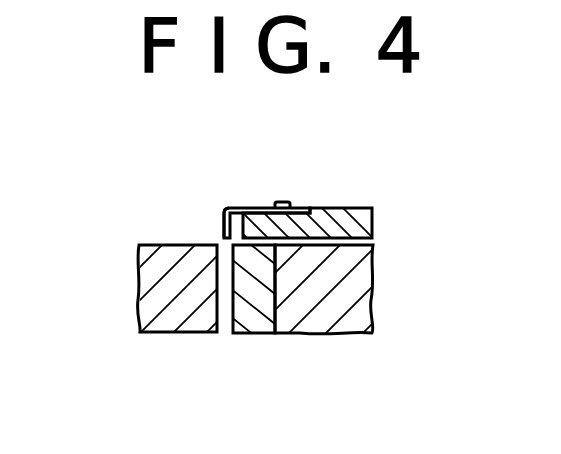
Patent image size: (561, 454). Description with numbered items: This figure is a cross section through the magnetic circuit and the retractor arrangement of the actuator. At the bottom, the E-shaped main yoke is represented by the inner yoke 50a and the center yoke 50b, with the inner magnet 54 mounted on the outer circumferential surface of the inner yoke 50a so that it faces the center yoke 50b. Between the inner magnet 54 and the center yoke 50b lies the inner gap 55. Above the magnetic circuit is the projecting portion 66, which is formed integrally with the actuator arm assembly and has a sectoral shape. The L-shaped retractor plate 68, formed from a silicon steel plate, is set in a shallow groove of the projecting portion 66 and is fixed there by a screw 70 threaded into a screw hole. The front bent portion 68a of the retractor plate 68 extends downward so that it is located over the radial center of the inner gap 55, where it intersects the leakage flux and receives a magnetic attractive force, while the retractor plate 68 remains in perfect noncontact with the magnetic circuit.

The inner yoke 50a is at (360, 317).
The center yoke 50b is at (140, 308).
The inner magnet 54 is at (258, 330).
The inner gap 55 is at (227, 322).
The projecting portion 66 is at (360, 222).
The retractor plate 68 is at (303, 207).
The front bent portion 68a is at (222, 221).
The screw 70 is at (282, 198).